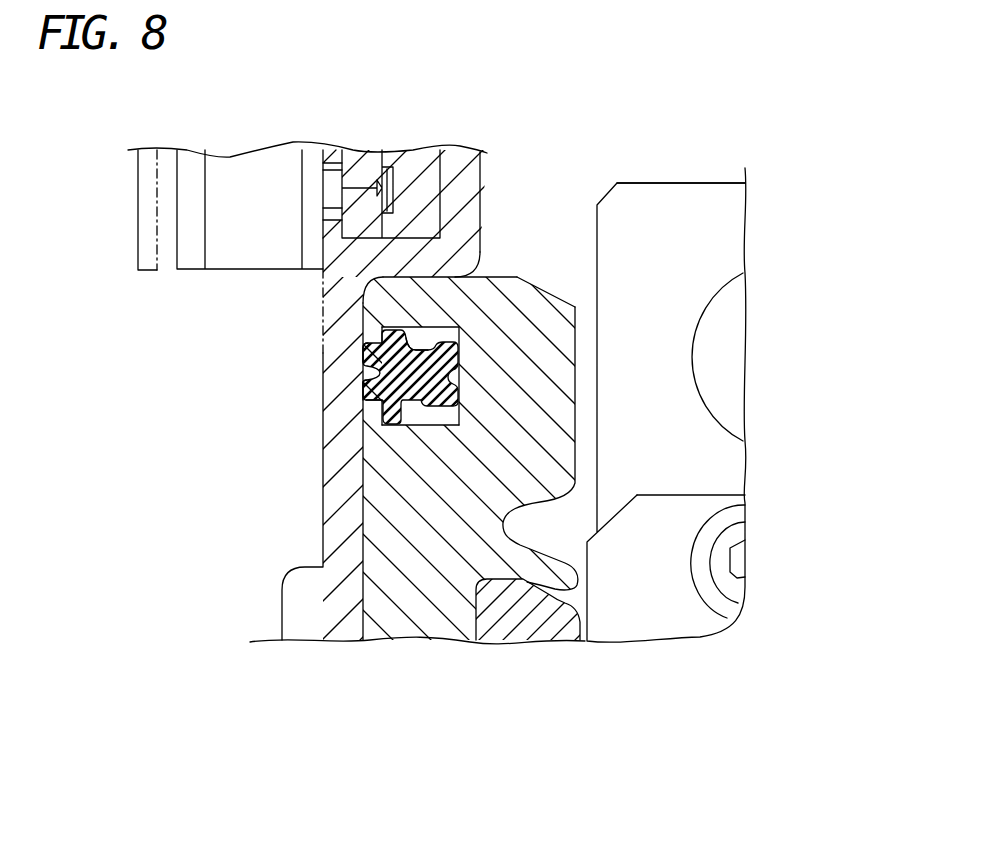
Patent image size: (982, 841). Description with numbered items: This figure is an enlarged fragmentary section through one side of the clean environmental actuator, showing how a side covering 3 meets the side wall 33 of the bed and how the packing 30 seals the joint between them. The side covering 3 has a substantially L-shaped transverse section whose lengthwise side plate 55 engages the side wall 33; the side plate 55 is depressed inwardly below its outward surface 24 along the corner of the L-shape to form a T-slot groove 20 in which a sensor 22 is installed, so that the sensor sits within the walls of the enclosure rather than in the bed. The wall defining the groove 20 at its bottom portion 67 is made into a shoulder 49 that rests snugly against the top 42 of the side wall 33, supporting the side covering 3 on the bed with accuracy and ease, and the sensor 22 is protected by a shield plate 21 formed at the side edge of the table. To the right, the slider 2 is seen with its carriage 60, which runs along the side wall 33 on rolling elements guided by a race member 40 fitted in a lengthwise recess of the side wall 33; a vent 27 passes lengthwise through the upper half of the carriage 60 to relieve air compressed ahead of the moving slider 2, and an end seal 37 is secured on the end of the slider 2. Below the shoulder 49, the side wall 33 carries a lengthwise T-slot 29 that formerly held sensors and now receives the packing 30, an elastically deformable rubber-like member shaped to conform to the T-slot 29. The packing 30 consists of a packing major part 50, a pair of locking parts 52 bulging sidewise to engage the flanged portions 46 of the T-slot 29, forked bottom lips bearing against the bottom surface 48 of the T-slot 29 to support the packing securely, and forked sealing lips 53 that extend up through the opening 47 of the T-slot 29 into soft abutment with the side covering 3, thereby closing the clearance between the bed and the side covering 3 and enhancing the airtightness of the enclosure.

The slider 2 is at (725, 232).
The side coverings 3 is at (338, 535).
The grooves 20 is at (418, 187).
The shield plates 21 is at (143, 188).
The sensors 22 is at (252, 185).
The outward surface 24 is at (323, 291).
The vents 27 is at (723, 346).
The T-slots 29 is at (422, 413).
The packings 30 is at (365, 375).
The side walls 33 is at (412, 602).
The end seals 37 is at (657, 603).
The race members 40 is at (520, 617).
The tops 42 is at (423, 365).
The flanged portions 46 is at (362, 340).
The opening 47 is at (370, 372).
The bottom surface 48 is at (519, 279).
The shoulders 49 is at (362, 305).
The packing major part 50 is at (483, 287).
The locking parts 52 is at (378, 418).
The sealing lips 53 is at (362, 400).
The side plate 55 is at (347, 322).
The carriage 60 is at (663, 218).
The bottom portions 67 is at (407, 250).